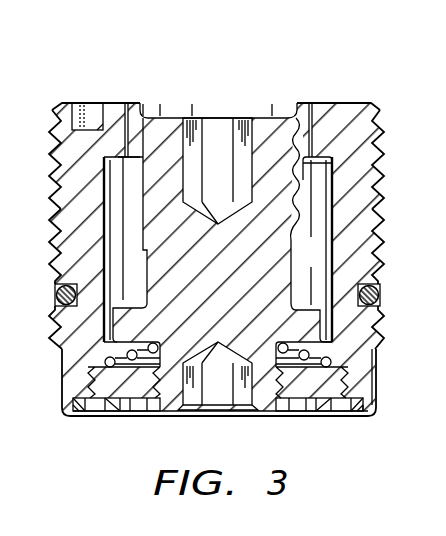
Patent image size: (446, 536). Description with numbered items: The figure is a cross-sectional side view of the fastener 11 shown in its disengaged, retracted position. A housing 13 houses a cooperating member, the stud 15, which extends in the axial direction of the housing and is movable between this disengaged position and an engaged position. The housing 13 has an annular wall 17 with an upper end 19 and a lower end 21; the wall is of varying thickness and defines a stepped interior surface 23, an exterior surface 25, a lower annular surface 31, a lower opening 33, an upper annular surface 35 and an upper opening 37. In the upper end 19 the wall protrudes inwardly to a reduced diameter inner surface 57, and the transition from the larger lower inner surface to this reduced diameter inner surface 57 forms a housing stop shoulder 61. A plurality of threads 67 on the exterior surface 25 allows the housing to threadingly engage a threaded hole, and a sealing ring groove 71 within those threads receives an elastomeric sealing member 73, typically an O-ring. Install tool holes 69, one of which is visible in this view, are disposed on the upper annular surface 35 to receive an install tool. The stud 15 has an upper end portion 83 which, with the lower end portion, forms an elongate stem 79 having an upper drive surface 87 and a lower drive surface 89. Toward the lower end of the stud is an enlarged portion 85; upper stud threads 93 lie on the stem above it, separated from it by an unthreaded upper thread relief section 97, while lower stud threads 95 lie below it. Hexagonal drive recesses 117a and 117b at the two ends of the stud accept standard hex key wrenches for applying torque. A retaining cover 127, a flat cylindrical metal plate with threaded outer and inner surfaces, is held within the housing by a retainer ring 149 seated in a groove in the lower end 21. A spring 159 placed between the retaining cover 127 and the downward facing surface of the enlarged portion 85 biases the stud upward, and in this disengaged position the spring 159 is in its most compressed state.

The fastener 11 is at (341, 52).
The housing 13 is at (57, 203).
The stud 15 is at (138, 268).
The annular wall 17 is at (53, 263).
The upper end 19 is at (380, 128).
The lower end 21 is at (367, 372).
The stepped interior surface 23 is at (373, 196).
The exterior surface 25 is at (378, 397).
The lower annular surface 31 is at (368, 418).
The lower opening 33 is at (90, 418).
The upper annular surface 35 is at (356, 102).
The upper opening 37 is at (127, 103).
The reduced diameter inner surface 57 is at (300, 108).
The housing stop shoulder 61 is at (68, 170).
The threads 67 is at (51, 117).
The install tool holes 69 is at (101, 112).
The sealing ring groove 71 is at (375, 283).
The sealing member 73 is at (379, 300).
The elongate stem 79 is at (300, 250).
The upper end portion 83 is at (290, 107).
The enlarged portion 85 is at (379, 348).
The upper drive surface 87 is at (168, 117).
The lower drive surface 89 is at (172, 417).
The upper stud threads 93 is at (135, 221).
The lower stud threads 95 is at (281, 418).
The upper thread relief section 97 is at (312, 284).
The drive recess 117a is at (213, 132).
The drive recess 117b is at (218, 388).
The retaining cover 127 is at (140, 413).
The retainer ring 149 is at (349, 414).
The spring 159 is at (106, 346).